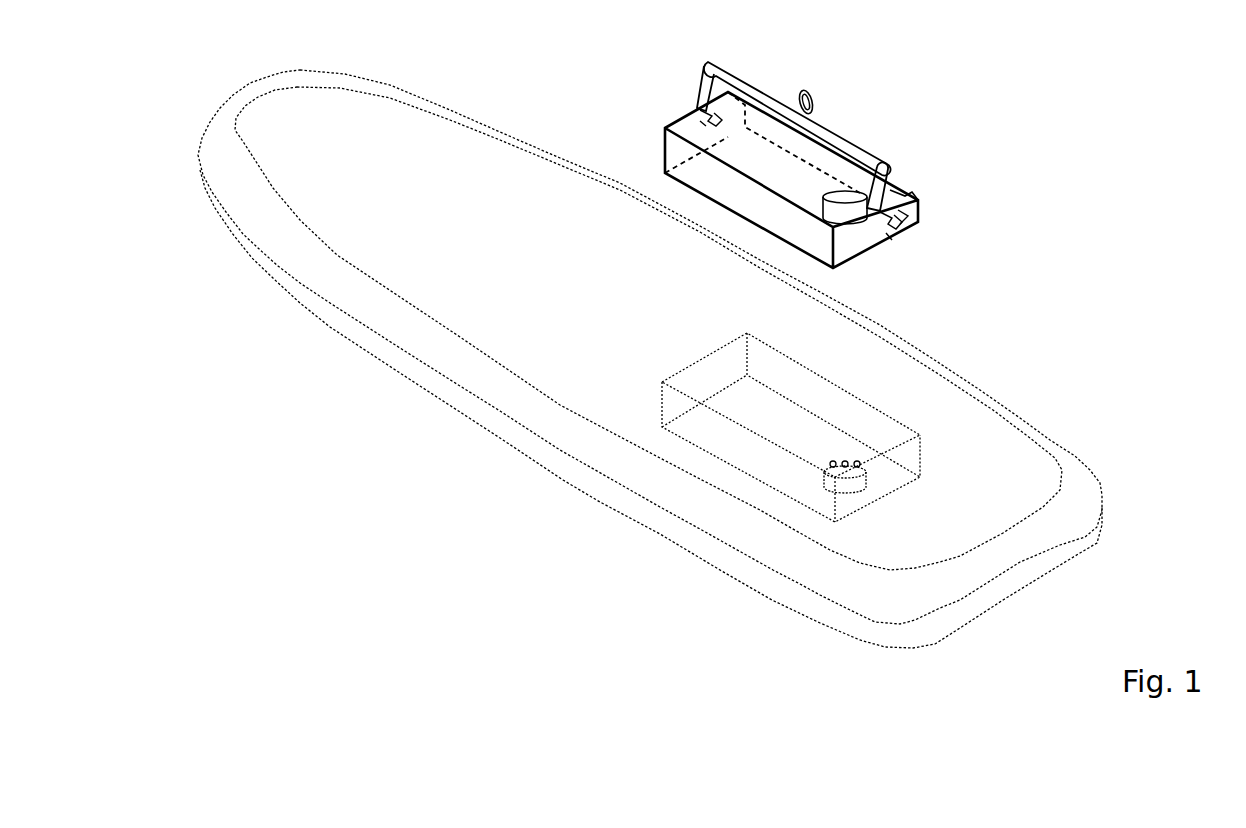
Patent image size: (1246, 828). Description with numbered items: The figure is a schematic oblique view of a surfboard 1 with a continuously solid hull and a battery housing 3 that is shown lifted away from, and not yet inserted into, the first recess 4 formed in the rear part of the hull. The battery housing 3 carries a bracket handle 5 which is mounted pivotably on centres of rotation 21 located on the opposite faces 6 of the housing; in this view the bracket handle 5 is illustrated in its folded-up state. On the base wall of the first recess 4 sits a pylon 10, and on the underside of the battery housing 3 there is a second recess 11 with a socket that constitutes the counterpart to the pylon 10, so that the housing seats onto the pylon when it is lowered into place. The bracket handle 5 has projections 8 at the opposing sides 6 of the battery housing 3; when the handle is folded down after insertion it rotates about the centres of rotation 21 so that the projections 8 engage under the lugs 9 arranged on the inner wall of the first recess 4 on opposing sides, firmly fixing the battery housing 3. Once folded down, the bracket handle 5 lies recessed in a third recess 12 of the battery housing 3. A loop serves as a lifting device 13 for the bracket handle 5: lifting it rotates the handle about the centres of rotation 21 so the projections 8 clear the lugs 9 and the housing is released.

The surfboard 1 is at (413, 267).
The battery housing 3 is at (707, 177).
The first recess 4 is at (713, 435).
The bracket handle 5 is at (857, 140).
The opposite faces 6 is at (697, 125).
The projections 8 is at (913, 227).
The lug 9 is at (703, 380).
The pylon 10 is at (748, 585).
The second recess 11 is at (848, 203).
The third recess 12 is at (913, 195).
The lifting device 13 is at (813, 93).
The centres of rotation 21 is at (700, 113).